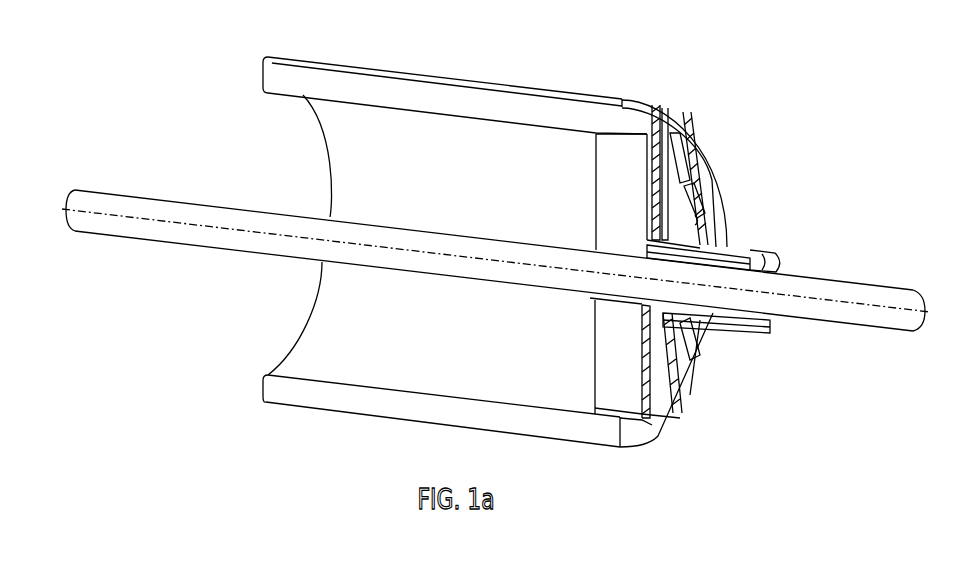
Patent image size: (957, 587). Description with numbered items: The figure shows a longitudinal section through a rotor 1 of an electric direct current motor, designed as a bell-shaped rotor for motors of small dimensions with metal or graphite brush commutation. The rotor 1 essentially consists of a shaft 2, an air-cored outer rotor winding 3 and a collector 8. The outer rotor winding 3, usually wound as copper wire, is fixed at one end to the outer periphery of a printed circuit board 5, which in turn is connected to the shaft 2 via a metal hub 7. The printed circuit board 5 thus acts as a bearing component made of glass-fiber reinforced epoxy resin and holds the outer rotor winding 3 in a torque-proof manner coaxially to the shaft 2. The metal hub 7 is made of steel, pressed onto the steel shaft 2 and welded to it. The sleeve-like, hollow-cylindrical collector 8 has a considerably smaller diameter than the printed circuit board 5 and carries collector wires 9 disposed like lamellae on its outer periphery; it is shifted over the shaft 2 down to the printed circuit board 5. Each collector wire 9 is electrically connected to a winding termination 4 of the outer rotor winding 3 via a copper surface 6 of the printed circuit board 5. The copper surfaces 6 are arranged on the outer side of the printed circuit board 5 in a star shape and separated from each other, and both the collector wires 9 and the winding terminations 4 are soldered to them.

The rotor 1 is at (797, 90).
The shaft 2 is at (114, 192).
The outer rotor winding 3 is at (322, 78).
The winding termination 4 is at (712, 132).
The printed circuit board 5 is at (607, 333).
The copper surface 6 is at (700, 217).
The metal hub 7 is at (593, 242).
The collector 8 is at (772, 258).
The collector wire 9 is at (748, 246).